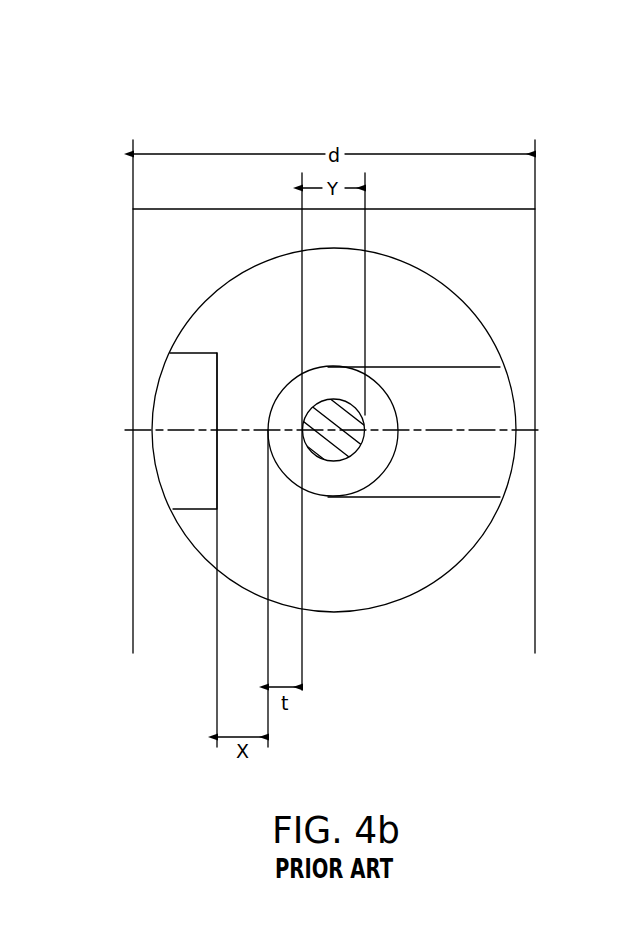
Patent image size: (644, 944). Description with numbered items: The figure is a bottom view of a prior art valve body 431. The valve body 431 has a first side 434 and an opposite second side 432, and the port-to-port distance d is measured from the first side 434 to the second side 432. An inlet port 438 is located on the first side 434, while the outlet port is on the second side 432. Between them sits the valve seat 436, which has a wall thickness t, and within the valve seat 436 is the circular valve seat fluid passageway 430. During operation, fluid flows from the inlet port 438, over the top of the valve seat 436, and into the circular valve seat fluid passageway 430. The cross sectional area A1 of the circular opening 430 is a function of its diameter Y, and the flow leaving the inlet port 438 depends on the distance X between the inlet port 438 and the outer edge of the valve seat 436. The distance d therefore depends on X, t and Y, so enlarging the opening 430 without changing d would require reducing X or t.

The valve body 431 is at (447, 110).
The circular valve seat fluid passageway 430 is at (362, 447).
The second side 432 is at (535, 583).
The first side 434 is at (133, 610).
The valve seat 436 is at (392, 397).
The inlet port 438 is at (217, 367).
The cross sectional area A1 is at (338, 450).